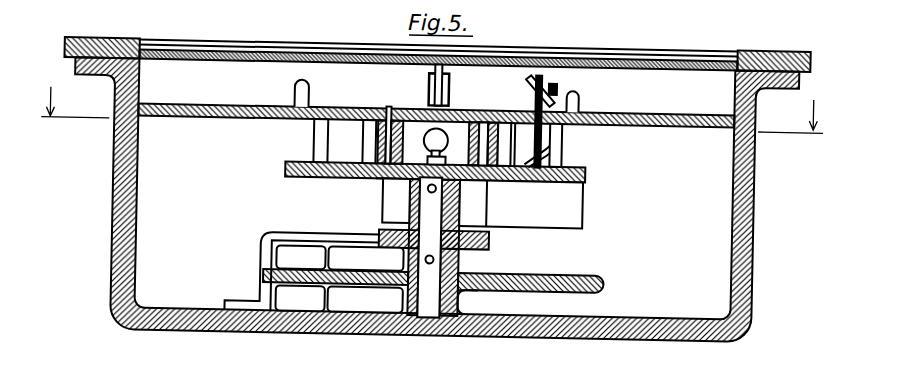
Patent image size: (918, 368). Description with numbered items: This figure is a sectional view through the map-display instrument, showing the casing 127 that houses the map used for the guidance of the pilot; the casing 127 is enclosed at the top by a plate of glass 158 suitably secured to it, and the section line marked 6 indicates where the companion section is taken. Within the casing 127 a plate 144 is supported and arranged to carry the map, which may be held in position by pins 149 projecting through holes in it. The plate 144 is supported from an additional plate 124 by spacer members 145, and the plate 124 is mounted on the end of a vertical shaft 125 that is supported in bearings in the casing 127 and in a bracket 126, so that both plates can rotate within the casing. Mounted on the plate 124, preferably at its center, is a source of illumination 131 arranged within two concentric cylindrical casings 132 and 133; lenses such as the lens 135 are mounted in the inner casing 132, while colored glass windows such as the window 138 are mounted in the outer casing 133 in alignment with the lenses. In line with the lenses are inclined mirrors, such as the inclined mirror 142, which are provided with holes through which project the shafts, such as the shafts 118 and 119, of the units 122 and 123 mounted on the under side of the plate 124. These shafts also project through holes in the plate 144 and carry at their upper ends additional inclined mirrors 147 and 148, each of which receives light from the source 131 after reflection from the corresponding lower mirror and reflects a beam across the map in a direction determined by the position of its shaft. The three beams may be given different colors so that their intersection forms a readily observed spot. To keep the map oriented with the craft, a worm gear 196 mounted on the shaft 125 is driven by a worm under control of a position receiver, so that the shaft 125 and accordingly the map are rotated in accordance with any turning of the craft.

The section line 6- 6 is at (432, 101).
The shaft 118 is at (540, 103).
The shaft 119 is at (433, 97).
The unit 122 is at (570, 211).
The unit 123 is at (394, 209).
The additional plate 124 is at (285, 171).
The vertical shaft 125 is at (441, 266).
The bracket 126 is at (315, 234).
The casing 127 is at (174, 330).
The source of illumination 131 is at (428, 134).
The cylindrical casing 132 is at (376, 180).
The cylindrical casing 133 is at (384, 110).
The lens 135 is at (470, 103).
The colored glass window 138 is at (496, 122).
The inclined mirror 142 is at (561, 151).
The plate 144 is at (672, 110).
The spacer member 145 is at (318, 132).
The additional inclined mirror 147 is at (528, 81).
The additional inclined mirror 148 is at (427, 82).
The pin 149 is at (293, 96).
The plate of glass 158 is at (235, 48).
The worm gear 196 is at (593, 267).